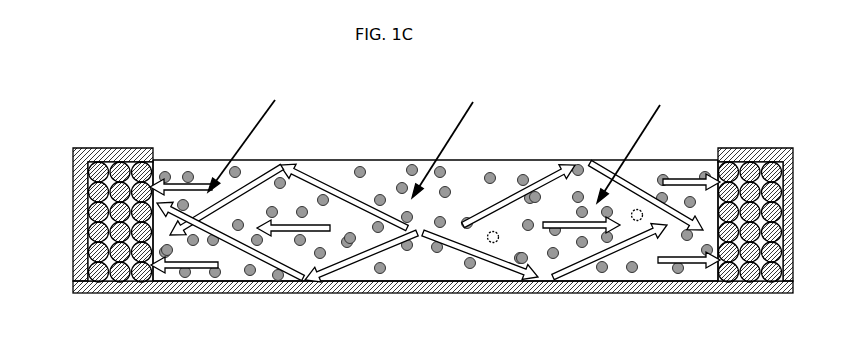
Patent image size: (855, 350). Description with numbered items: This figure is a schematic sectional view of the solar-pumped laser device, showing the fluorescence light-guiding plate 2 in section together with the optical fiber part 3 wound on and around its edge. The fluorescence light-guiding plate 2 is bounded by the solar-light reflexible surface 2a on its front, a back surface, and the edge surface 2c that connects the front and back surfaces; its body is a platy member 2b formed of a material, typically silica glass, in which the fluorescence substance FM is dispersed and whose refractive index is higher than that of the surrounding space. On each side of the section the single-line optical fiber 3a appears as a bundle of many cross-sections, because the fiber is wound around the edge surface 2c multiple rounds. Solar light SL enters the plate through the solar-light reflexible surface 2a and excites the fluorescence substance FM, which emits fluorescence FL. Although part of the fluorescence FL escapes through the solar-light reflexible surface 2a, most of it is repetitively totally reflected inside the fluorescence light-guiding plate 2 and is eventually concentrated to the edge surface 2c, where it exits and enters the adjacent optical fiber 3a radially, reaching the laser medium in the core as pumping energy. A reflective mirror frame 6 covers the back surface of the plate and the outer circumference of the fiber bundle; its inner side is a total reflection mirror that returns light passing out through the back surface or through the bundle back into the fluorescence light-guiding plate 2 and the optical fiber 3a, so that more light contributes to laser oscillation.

The fluorescence light-guiding plate 2 is at (435, 192).
The solar-light reflexible surface 2a is at (510, 160).
The platy member 2b is at (437, 274).
The edge surface 2c is at (157, 167).
The optical fiber part 3 is at (769, 126).
The single-line optical fiber 3a is at (750, 156).
The reflective mirror frame 6 is at (148, 292).
The fluorescence substance FM is at (488, 178).
The fluorescence FL is at (258, 166).
The solar light SL is at (441, 139).